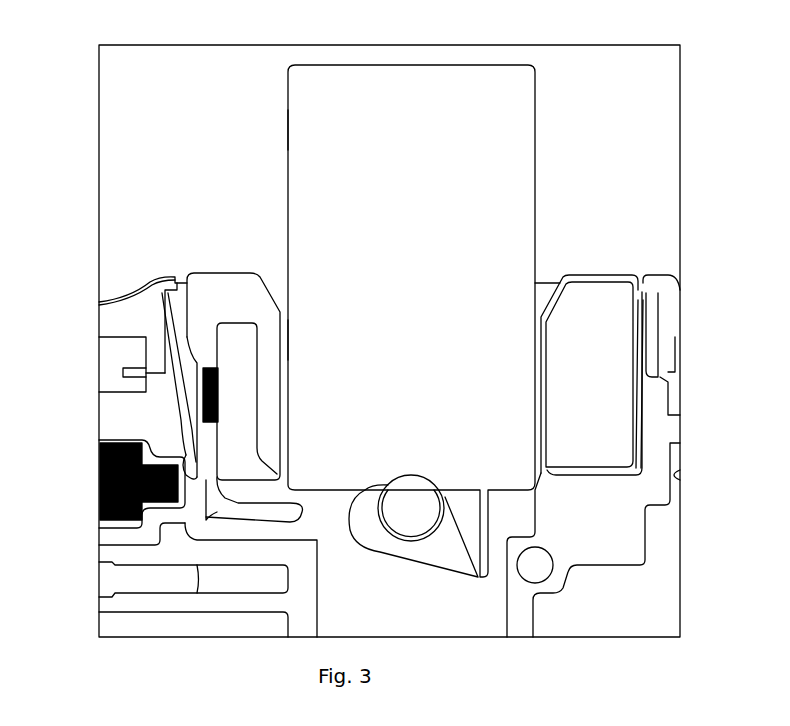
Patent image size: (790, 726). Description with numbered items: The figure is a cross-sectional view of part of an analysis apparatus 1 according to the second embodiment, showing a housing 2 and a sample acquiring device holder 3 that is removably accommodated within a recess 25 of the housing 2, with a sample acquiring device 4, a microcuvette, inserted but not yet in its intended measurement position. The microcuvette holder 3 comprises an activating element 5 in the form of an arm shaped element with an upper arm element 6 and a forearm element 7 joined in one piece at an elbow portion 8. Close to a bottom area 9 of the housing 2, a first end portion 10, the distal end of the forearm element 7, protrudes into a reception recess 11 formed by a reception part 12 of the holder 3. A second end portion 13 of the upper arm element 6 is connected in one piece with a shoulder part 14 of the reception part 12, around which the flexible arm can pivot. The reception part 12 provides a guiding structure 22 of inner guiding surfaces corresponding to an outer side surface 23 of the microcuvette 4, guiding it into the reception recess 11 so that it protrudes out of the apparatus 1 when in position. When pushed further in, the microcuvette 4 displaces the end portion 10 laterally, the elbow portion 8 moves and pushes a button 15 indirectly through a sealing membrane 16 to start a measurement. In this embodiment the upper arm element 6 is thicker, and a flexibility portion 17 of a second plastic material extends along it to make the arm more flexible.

The analysis apparatus 1 is at (190, 138).
The housing 2 is at (608, 541).
The sample acquiring device holder 3 is at (578, 270).
The sample acquiring device 4 is at (507, 108).
The activating element 5 is at (220, 356).
The upper arm element 6 is at (205, 441).
The forearm element 7 is at (262, 510).
The elbow portion 8 is at (205, 487).
The bottom area 9 is at (432, 607).
The first end portion 10 is at (307, 524).
The reception recess 11 is at (343, 497).
The reception part 12 is at (591, 290).
The second end portion 13 is at (197, 325).
The shoulder part 14 is at (221, 283).
The button 15 is at (112, 492).
The membrane 16 is at (122, 537).
The flexibility portion 17 is at (218, 393).
The guiding structure 22 is at (293, 343).
The outer side surface 23 is at (288, 128).
The recess 25 is at (182, 377).